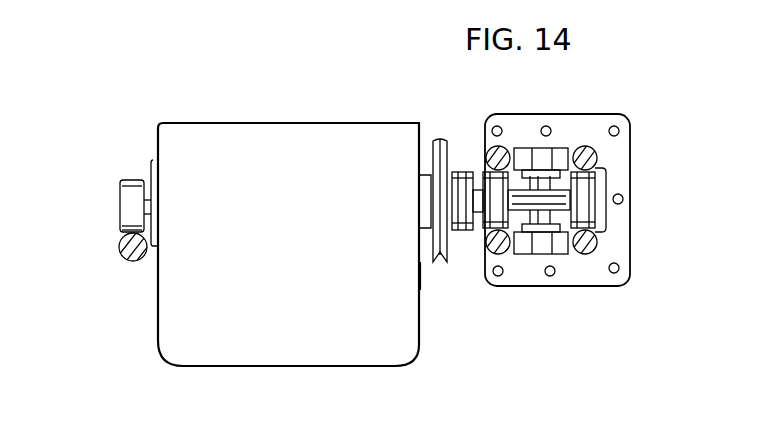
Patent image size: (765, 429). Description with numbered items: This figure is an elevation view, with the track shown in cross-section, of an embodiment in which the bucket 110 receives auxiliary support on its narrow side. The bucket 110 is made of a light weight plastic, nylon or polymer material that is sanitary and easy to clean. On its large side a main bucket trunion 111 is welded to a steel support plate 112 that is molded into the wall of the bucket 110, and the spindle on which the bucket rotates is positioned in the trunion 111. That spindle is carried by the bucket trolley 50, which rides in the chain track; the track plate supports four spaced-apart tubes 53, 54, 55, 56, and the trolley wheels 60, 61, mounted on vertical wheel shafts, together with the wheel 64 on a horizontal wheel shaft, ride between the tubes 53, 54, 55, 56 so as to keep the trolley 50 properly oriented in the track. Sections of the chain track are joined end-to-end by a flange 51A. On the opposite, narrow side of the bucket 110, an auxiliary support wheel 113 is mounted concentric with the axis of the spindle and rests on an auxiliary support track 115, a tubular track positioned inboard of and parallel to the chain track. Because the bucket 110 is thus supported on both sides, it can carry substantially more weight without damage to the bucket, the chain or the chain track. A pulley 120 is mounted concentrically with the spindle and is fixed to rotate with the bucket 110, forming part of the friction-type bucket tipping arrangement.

The bucket 110 is at (236, 138).
The main bucket trunion 111 is at (426, 175).
The steel support plate 112 is at (420, 275).
The auxiliary support wheel 113 is at (128, 206).
The auxiliary support track 115 is at (128, 252).
The pulley 120 is at (442, 135).
The bucket trolley 50 is at (560, 135).
The flange 51A is at (601, 278).
The tube 53 is at (488, 152).
The tube 54 is at (586, 146).
The tube 55 is at (594, 248).
The tube 56 is at (528, 280).
The wheel 60 is at (537, 150).
The wheel 61 is at (556, 250).
The wheel 64 is at (590, 218).